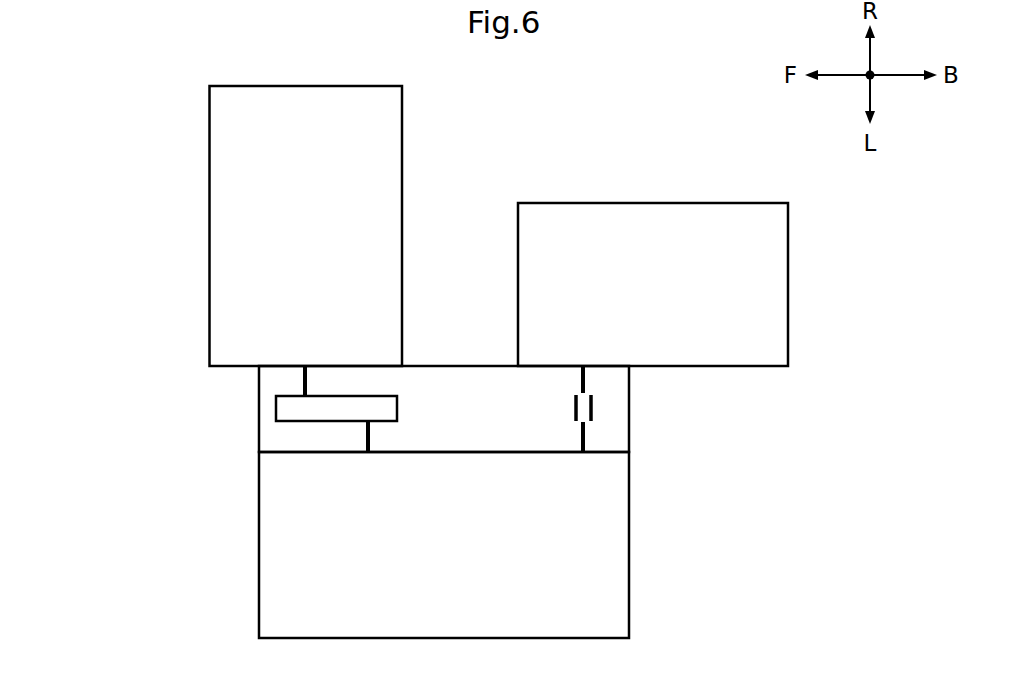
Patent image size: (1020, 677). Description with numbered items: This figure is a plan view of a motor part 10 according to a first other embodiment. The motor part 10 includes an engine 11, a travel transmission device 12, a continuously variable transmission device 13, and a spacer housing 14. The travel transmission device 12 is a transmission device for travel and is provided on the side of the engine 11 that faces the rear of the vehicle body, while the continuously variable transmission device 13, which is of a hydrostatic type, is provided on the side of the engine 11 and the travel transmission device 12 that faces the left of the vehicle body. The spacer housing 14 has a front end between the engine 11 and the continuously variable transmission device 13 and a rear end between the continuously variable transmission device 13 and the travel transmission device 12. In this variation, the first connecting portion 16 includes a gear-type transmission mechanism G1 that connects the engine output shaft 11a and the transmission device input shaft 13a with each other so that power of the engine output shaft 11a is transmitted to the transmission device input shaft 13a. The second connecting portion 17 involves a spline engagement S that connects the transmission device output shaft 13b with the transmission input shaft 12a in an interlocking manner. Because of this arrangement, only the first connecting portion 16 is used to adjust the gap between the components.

The motor part 10 is at (182, 161).
The engine 11 is at (209, 229).
The engine output shaft 11a is at (305, 381).
The travel transmission device 12 is at (789, 287).
The transmission input shaft 12a is at (598, 378).
The continuously variable transmission device 13 is at (258, 541).
The transmission device input shaft 13a is at (371, 436).
The transmission device output shaft 13b is at (586, 430).
The spacer housing 14 is at (630, 410).
The first connecting portion 16 is at (341, 396).
The second connecting portion 17 is at (575, 408).